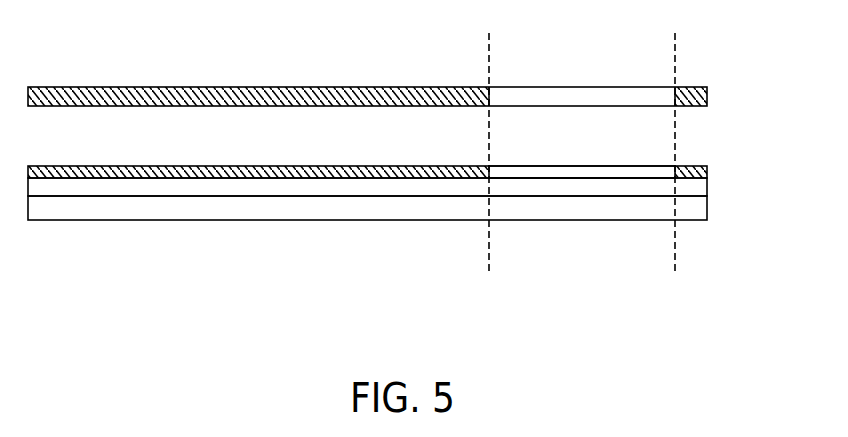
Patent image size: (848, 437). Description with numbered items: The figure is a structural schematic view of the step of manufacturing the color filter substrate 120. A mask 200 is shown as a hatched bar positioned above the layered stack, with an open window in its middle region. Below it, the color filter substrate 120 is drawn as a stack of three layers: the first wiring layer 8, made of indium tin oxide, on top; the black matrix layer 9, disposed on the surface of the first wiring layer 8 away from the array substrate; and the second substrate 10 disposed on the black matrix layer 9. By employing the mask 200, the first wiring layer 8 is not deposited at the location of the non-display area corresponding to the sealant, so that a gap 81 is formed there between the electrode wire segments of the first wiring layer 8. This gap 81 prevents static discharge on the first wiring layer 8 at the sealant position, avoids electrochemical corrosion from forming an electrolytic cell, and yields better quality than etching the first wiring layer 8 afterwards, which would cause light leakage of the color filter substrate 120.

The mask 200 is at (292, 87).
The first wiring layer 8 is at (275, 170).
The gap 81 is at (580, 172).
The black matrix layer 9 is at (686, 186).
The second substrate 10 is at (765, 185).
The color filter substrate 120 is at (416, 218).